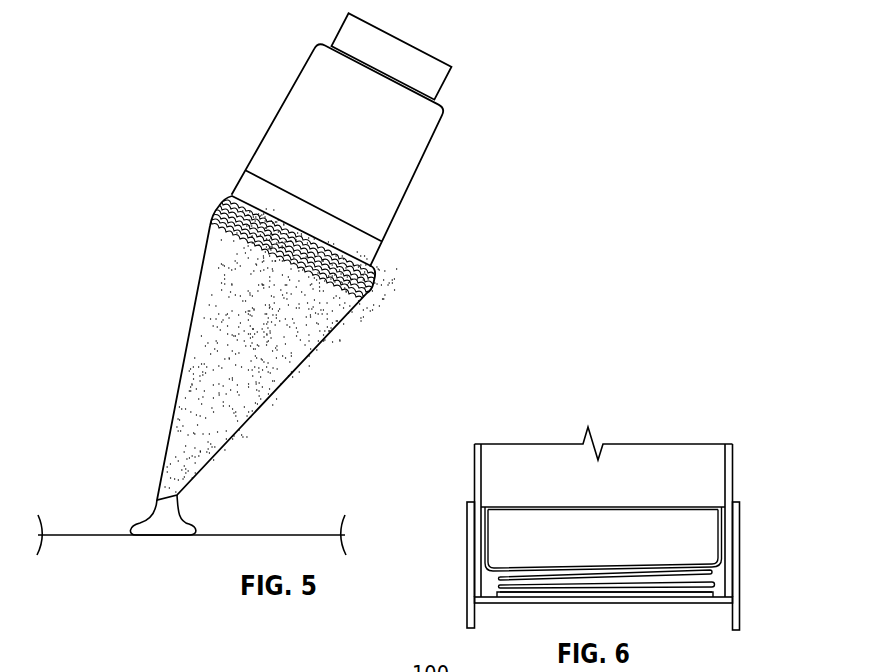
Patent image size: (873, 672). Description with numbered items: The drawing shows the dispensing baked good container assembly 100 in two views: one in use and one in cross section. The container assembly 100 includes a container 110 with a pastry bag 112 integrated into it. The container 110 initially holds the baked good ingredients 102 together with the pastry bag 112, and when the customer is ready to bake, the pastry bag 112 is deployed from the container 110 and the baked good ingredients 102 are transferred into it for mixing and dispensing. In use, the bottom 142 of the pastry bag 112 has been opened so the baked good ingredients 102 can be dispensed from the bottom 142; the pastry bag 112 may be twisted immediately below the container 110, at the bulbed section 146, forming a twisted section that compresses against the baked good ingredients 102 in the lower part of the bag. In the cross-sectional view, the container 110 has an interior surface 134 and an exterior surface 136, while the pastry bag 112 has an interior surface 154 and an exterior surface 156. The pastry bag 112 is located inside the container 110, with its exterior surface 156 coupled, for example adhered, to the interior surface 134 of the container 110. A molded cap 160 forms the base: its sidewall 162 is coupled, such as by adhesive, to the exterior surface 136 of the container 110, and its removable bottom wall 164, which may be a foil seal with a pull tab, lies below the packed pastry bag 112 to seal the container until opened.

In FIG. 5, the container assembly 100 is at (211, 84).
In FIG. 6, the container assembly 100 is at (765, 432).
In FIG. 5, the baked good ingredients 102 is at (213, 336).
In FIG. 5, the container 110 is at (412, 188).
In FIG. 6, the container 110 is at (727, 472).
In FIG. 5, the pastry bag 112 is at (298, 360).
In FIG. 6, the pastry bag 112 is at (712, 582).
In FIG. 6, the interior surface 134 is at (481, 473).
In FIG. 6, the exterior surface 136 is at (474, 477).
In FIG. 5, the bottom 142 is at (180, 503).
In FIG. 5, the bulbed section 146 is at (372, 297).
In FIG. 6, the interior surface 154 is at (488, 540).
In FIG. 6, the exterior surface 156 is at (477, 558).
In FIG. 6, the molded cap 160 is at (739, 595).
In FIG. 6, the sidewall 162 is at (735, 537).
In FIG. 6, the bottom wall 164 is at (657, 602).